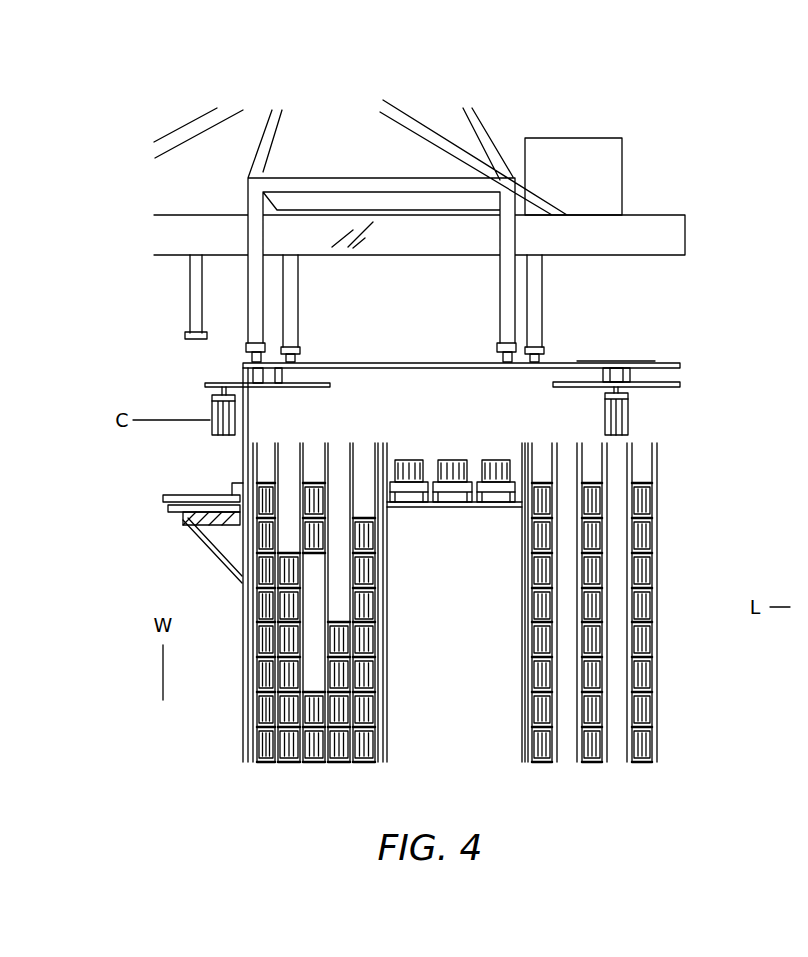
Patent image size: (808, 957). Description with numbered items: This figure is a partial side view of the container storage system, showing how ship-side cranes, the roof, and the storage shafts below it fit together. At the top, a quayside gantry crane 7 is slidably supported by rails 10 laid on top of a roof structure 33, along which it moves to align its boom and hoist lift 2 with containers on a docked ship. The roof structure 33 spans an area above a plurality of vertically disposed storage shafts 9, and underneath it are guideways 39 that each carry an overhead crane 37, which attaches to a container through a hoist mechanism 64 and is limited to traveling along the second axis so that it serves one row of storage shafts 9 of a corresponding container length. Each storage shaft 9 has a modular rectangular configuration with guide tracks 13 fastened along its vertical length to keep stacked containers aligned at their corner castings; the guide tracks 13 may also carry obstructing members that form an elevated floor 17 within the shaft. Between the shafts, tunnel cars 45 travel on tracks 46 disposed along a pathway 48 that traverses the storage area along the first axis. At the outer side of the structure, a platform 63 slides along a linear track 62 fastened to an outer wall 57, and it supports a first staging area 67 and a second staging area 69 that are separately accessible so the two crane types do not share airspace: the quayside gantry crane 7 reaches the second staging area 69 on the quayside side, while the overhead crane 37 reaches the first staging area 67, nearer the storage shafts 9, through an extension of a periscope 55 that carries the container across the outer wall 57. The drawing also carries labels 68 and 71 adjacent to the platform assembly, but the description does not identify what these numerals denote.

The boom and hoist lift 2 is at (185, 335).
The quayside gantry crane 7 is at (668, 215).
The storage shaft 9 is at (337, 520).
The rail 10 is at (265, 363).
The guide track 13 is at (553, 448).
The elevated floor 17 is at (312, 553).
The roof structure 33 is at (565, 364).
The overhead crane 37 is at (620, 375).
The guideway 39 is at (673, 367).
The tunnel car 45 is at (455, 492).
The track 46 is at (467, 495).
The pathway 48 is at (432, 507).
The periscope 55 is at (205, 385).
The outer wall 57 is at (240, 723).
The linear track 62 is at (180, 522).
The platform 63 is at (163, 508).
The hoist mechanism 64 is at (225, 395).
The first staging area 67 is at (225, 497).
The pivot 68 is at (208, 497).
The second staging area 69 is at (178, 495).
The guide bracket 71 is at (232, 483).